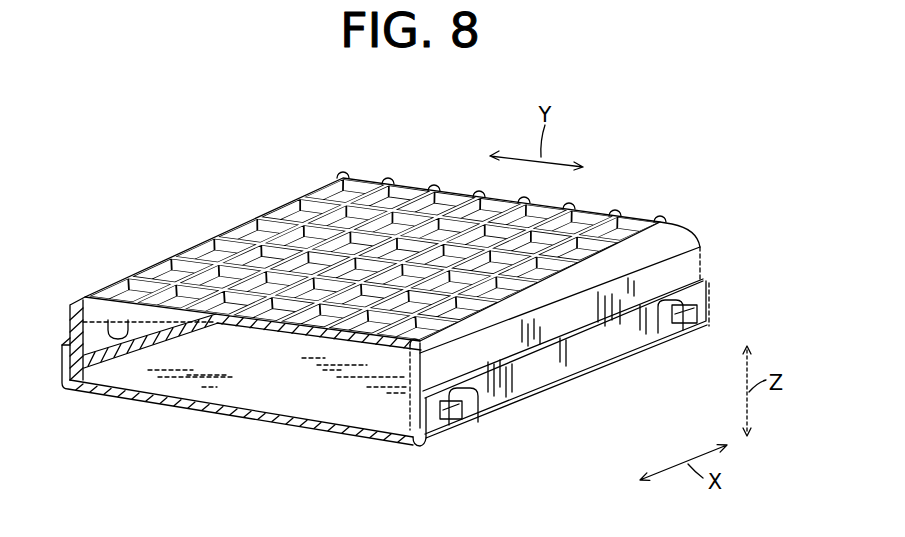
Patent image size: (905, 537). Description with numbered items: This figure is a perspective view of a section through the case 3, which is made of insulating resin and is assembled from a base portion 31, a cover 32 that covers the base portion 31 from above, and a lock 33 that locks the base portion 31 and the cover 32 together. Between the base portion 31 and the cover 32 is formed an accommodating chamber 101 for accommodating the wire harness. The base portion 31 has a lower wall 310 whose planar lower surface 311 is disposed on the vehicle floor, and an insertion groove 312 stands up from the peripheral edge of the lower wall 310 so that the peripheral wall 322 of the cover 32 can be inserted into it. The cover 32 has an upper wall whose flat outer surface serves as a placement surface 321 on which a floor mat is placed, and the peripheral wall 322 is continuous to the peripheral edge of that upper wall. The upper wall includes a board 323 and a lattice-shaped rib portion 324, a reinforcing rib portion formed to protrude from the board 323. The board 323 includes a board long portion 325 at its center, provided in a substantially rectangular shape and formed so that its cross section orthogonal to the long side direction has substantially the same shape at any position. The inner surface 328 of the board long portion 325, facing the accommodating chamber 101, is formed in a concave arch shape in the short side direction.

The case 3 is at (452, 126).
The base portion 31 is at (716, 309).
The cover 32 is at (709, 243).
The lock 33 is at (474, 428).
The accommodating chamber 101 is at (298, 387).
The lower wall 310 is at (317, 422).
The lower surface 311 is at (378, 438).
The insertion groove 312 is at (414, 446).
The placement surface 321 is at (666, 222).
The peripheral wall 322 is at (688, 270).
The board 323 is at (88, 318).
The lattice-shaped rib portion 324 is at (390, 180).
The board long portion 325 is at (73, 305).
The inner surface 328 is at (131, 318).